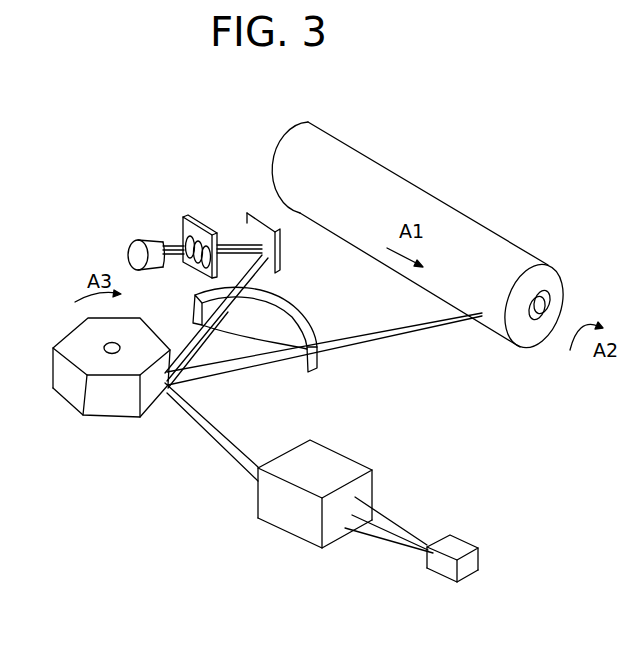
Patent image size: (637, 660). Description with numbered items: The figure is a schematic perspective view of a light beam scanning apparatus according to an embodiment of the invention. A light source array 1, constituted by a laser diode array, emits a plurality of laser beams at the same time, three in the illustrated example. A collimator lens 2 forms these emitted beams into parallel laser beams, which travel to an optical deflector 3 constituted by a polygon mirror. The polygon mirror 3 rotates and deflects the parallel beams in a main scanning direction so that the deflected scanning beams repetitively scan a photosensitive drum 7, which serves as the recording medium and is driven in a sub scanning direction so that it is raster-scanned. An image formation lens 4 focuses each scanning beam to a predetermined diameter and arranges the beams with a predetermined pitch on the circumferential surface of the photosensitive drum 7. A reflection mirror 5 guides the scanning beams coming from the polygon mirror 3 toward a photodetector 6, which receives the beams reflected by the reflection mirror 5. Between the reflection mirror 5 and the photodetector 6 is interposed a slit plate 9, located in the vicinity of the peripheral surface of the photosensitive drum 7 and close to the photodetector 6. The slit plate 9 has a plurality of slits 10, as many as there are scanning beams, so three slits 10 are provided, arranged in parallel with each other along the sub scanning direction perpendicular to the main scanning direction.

The light source array 1 is at (460, 542).
The collimator lens 2 is at (347, 465).
The optical deflector 3 is at (105, 417).
The image formation lens 4 is at (322, 370).
The reflection mirror 5 is at (247, 212).
The photodetector 6 is at (152, 270).
The photosensitive drum 7 is at (508, 250).
The slit plate 9 is at (197, 220).
The slits 10 is at (183, 230).